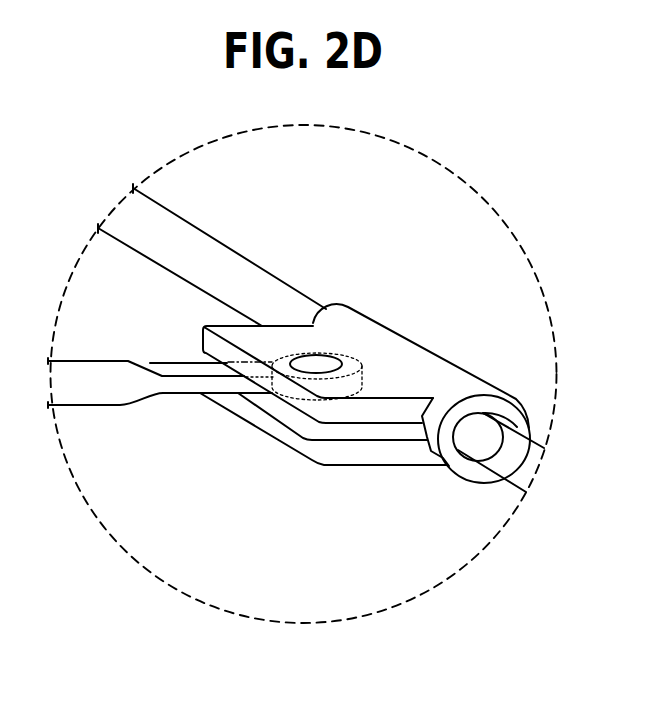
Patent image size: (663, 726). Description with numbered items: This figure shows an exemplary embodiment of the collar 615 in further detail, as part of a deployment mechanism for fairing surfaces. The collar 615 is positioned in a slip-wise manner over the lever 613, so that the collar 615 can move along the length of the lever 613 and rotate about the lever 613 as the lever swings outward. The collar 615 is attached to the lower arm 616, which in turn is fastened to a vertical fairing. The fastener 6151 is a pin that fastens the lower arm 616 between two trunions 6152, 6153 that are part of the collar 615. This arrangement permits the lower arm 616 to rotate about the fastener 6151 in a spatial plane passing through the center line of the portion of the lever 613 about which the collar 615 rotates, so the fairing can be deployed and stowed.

The lever 613 is at (228, 247).
The collar 615 is at (421, 342).
The fastener 6151 is at (321, 354).
The trunion 6152 is at (345, 466).
The trunion 6153 is at (201, 327).
The lower arm 616 is at (115, 399).